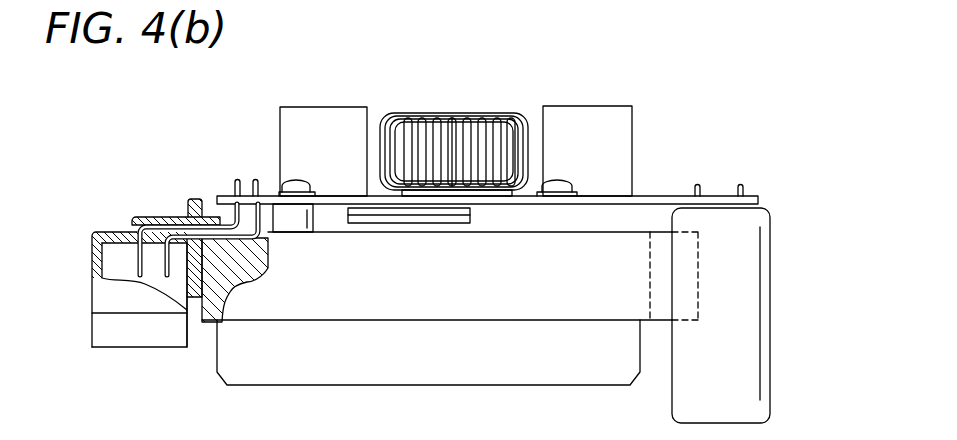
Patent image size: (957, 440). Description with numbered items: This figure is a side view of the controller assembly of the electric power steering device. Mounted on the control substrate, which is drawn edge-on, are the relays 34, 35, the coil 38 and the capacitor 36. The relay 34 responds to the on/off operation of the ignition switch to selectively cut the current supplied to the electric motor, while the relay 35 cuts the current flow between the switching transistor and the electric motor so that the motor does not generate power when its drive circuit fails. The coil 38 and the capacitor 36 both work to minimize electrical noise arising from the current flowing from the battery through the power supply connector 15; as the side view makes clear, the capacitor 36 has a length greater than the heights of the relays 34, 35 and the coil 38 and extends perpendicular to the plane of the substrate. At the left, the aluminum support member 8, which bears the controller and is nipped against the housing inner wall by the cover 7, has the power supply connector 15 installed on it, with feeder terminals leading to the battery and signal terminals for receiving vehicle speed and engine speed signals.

The cover 7 is at (121, 236).
The support member 8 is at (216, 290).
The power supply connector 15 is at (125, 338).
The relay 34 is at (327, 118).
The relay 35 is at (612, 117).
The capacitor 36 is at (683, 407).
The coil 38 is at (495, 108).